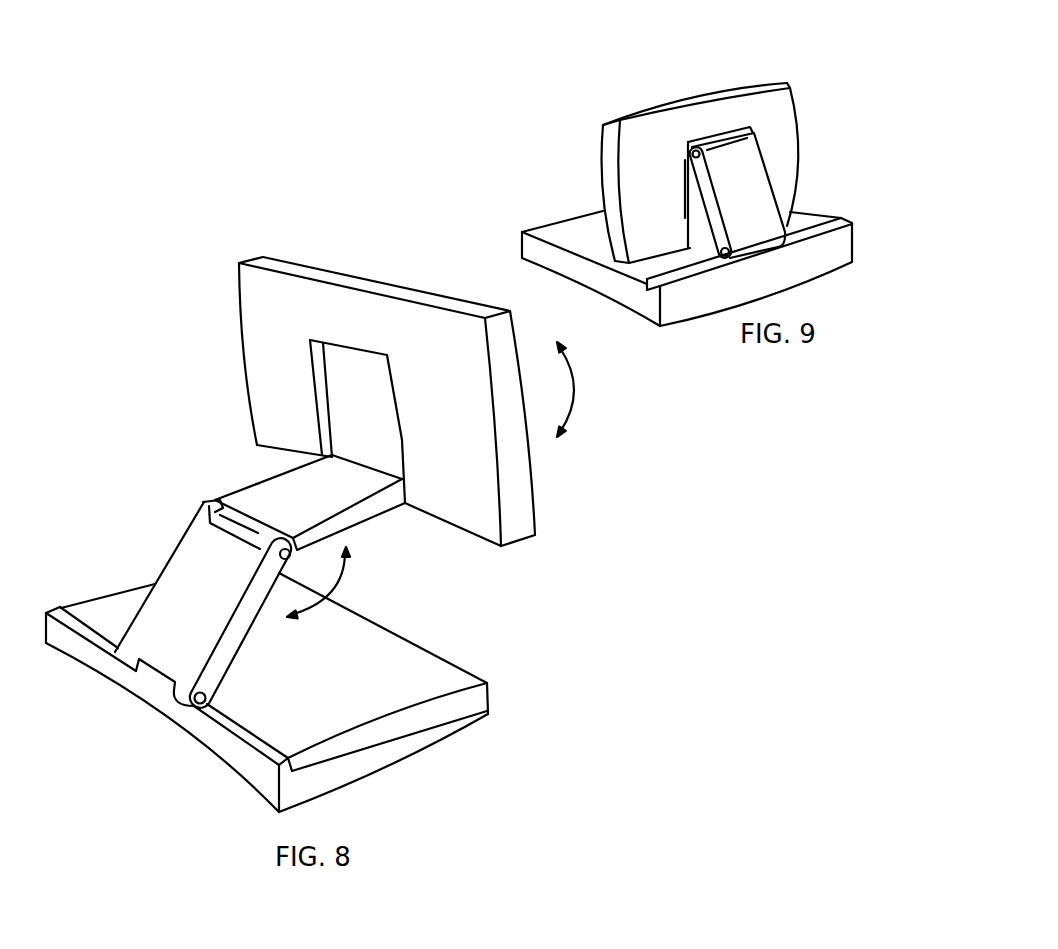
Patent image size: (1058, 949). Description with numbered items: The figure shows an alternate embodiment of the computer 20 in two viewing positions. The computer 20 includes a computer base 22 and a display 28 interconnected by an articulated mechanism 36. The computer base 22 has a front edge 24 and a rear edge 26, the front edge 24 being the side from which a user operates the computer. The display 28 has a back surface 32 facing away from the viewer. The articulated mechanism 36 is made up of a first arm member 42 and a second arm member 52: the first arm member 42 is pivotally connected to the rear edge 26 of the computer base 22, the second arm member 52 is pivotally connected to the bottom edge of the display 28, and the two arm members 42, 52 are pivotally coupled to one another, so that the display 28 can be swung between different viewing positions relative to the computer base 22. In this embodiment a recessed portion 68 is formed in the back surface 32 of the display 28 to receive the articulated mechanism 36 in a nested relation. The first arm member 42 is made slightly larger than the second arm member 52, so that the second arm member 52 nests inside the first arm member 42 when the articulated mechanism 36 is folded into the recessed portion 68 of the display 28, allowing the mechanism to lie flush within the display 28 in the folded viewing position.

In FIG. 8, the computer 20 is at (282, 232).
In FIG. 9, the computer 20 is at (671, 46).
In FIG. 8, the computer base 22 is at (332, 727).
In FIG. 9, the computer base 22 is at (558, 233).
In FIG. 8, the front edge 24 is at (492, 688).
In FIG. 8, the rear edge 26 is at (249, 772).
In FIG. 8, the display 28 is at (520, 486).
In FIG. 9, the display 28 is at (785, 103).
In FIG. 8, the back surface 32 is at (258, 306).
In FIG. 8, the articulated mechanism 36 is at (176, 512).
In FIG. 8, the first arm member 42 is at (172, 588).
In FIG. 9, the first arm member 42 is at (760, 232).
In FIG. 8, the second arm member 52 is at (372, 517).
In FIG. 8, the recessed portion 68 is at (345, 405).